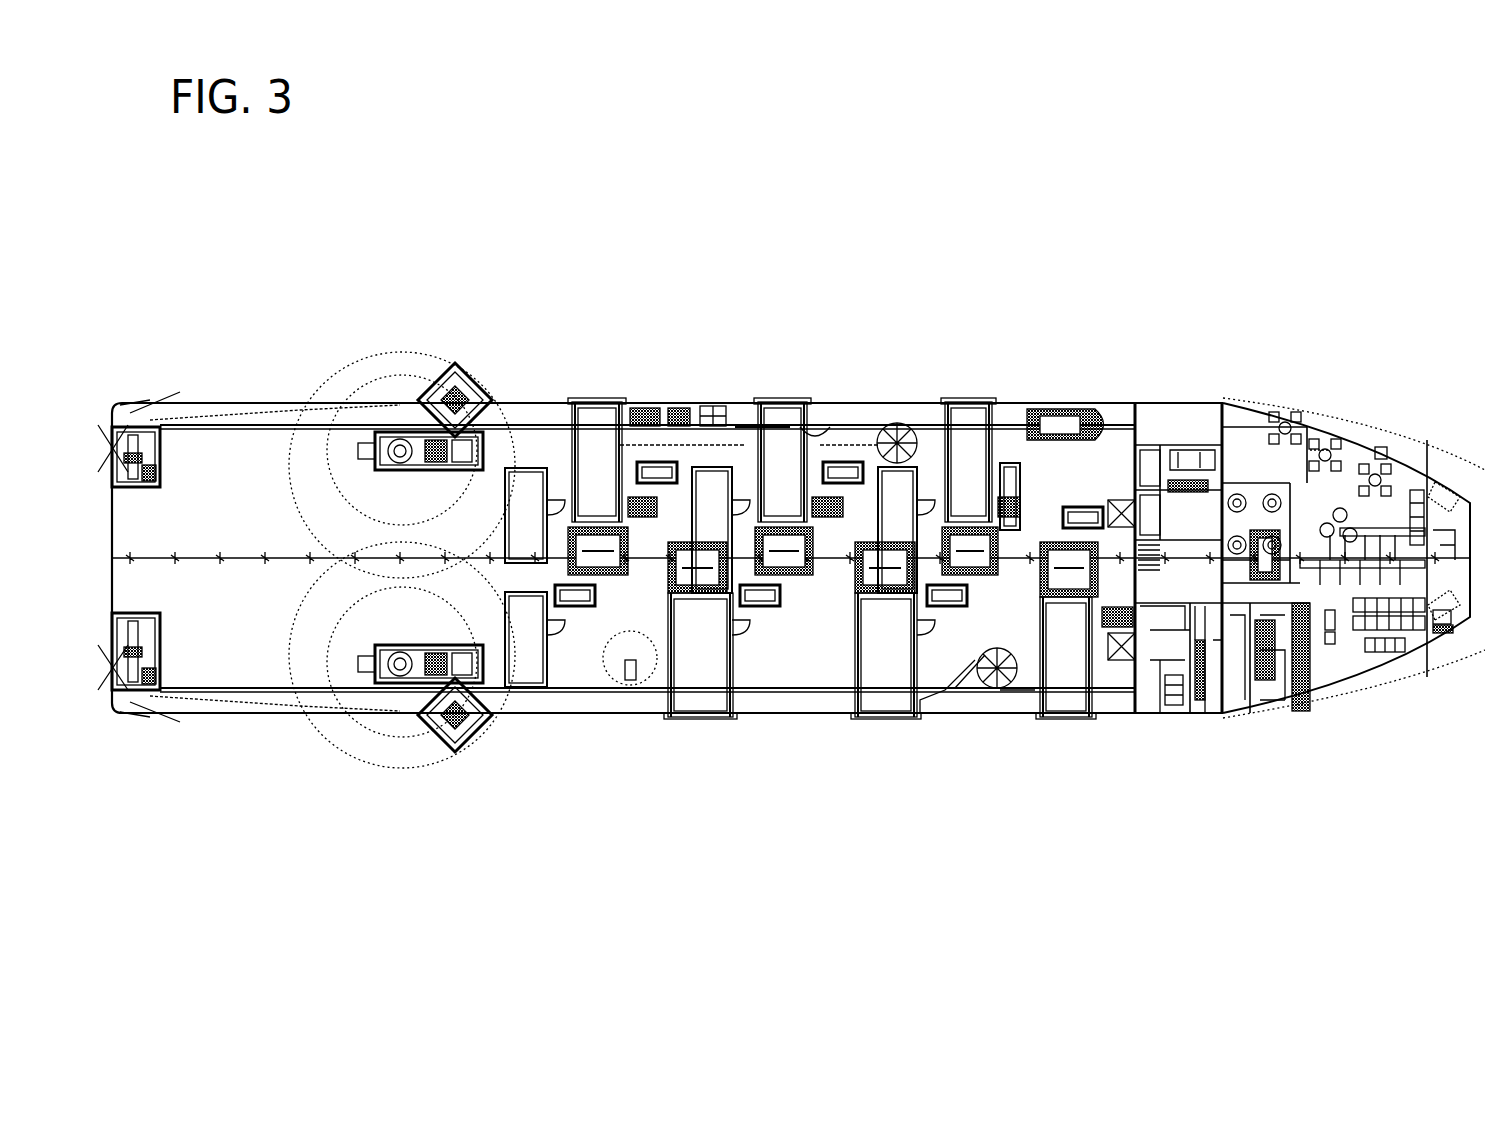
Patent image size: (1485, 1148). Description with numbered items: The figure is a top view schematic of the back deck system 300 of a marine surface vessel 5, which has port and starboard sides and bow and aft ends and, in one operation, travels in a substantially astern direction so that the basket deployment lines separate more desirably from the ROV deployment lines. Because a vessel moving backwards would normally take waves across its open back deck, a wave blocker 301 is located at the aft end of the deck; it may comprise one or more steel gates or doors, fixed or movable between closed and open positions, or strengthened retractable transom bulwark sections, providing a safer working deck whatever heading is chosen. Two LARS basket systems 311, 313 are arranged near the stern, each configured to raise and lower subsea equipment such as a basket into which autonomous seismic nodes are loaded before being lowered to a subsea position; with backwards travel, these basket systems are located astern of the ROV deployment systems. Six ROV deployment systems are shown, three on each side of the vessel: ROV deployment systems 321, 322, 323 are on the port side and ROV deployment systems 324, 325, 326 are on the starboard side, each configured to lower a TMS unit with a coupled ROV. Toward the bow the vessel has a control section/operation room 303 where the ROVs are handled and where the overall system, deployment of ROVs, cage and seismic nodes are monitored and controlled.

The surface vessel 5 is at (1230, 397).
The back deck system 300 is at (915, 112).
The wave blocker 301 is at (137, 713).
The control section/operation room 303 is at (1307, 677).
The LARS basket system 311 is at (415, 413).
The LARS basket system 313 is at (415, 698).
The ROV deployment system 321 is at (607, 407).
The ROV deployment system 322 is at (780, 407).
The ROV deployment system 323 is at (968, 407).
The ROV deployment system 324 is at (692, 688).
The ROV deployment system 325 is at (875, 688).
The ROV deployment system 326 is at (1055, 688).